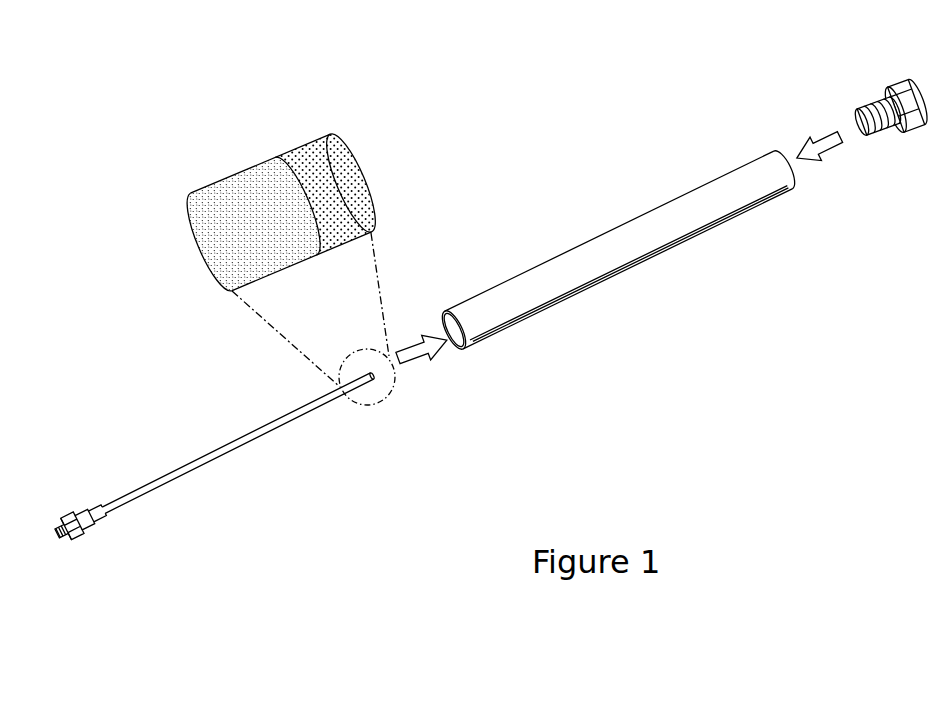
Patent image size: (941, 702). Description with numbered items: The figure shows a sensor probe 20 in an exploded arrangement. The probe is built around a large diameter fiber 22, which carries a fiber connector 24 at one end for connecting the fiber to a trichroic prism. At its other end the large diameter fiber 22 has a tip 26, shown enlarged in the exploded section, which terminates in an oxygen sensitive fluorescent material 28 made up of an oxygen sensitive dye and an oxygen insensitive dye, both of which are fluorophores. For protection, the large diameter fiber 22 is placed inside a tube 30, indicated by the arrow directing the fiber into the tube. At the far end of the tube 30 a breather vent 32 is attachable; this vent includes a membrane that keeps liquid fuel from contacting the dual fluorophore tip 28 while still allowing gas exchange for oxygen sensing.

The sensor probe 20 is at (463, 93).
The large diameter fiber 22 is at (170, 478).
The fiber connector 24 is at (78, 532).
The tip 26 is at (187, 205).
The oxygen sensitive fluorescent material 28 is at (298, 147).
The tube 30 is at (597, 272).
The breather vent 32 is at (877, 103).